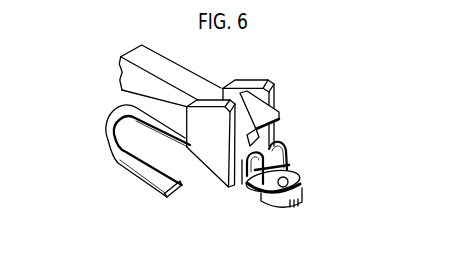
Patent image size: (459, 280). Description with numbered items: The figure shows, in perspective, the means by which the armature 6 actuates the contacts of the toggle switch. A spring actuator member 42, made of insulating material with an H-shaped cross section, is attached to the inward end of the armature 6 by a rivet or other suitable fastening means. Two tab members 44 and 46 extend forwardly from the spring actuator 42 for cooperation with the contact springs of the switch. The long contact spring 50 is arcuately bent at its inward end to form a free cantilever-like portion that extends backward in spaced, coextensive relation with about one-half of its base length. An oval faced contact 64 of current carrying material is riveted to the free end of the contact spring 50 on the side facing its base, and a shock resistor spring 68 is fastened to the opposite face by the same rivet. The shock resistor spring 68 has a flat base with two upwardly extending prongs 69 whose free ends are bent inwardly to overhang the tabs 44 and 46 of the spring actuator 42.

The armature 6 is at (170, 69).
The spring actuator member 42 is at (276, 70).
The tab member 44 is at (280, 110).
The tab member 46 is at (282, 168).
The long contact spring 50 is at (298, 181).
The oval faced contact 64 is at (288, 208).
The shock resistor spring 68 is at (246, 185).
The prong 69 is at (275, 146).